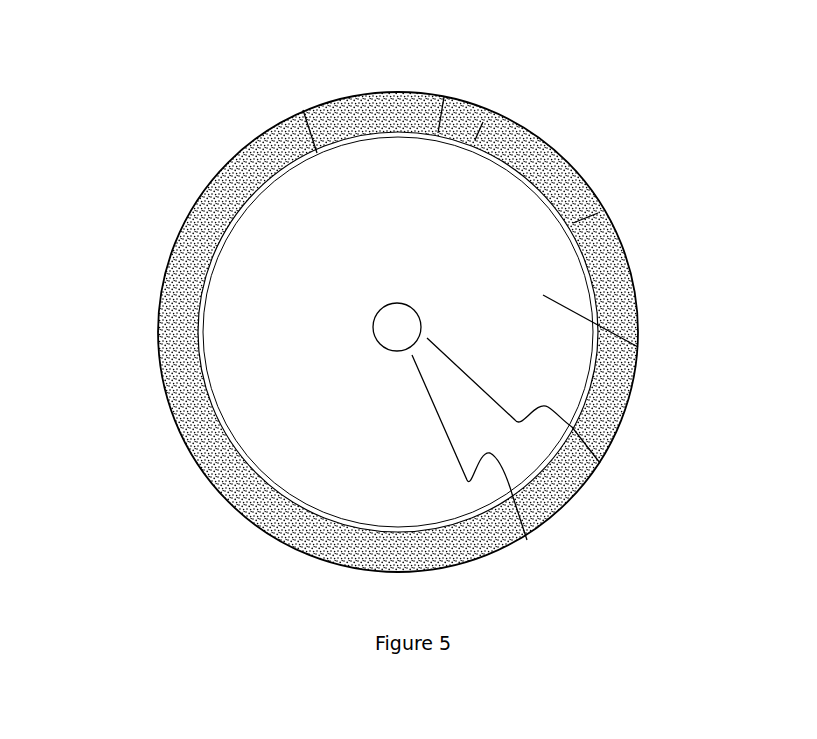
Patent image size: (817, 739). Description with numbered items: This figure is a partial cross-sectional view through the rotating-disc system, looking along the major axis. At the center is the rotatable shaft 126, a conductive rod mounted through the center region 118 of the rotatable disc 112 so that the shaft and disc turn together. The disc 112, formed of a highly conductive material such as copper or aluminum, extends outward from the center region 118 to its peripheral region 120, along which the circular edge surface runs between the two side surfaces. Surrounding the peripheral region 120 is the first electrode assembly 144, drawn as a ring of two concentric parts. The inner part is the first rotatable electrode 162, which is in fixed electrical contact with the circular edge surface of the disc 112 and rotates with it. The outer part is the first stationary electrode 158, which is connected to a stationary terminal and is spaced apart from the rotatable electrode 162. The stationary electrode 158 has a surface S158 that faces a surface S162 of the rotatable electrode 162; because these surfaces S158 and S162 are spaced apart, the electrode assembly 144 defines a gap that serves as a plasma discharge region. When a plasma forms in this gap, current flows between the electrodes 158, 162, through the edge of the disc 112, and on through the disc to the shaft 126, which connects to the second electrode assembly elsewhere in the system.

The rotatable disc 112 is at (272, 282).
The center region 118 is at (600, 463).
The peripheral region 120 is at (638, 347).
The rotatable shaft 126 is at (527, 540).
The first electrode assembly 144 is at (165, 450).
The first stationary electrode 158 is at (247, 140).
The first rotatable electrode 162 is at (303, 110).
The surface of the first stationary electrode S158 is at (438, 133).
The surface of the first rotatable electrode S162 is at (598, 213).